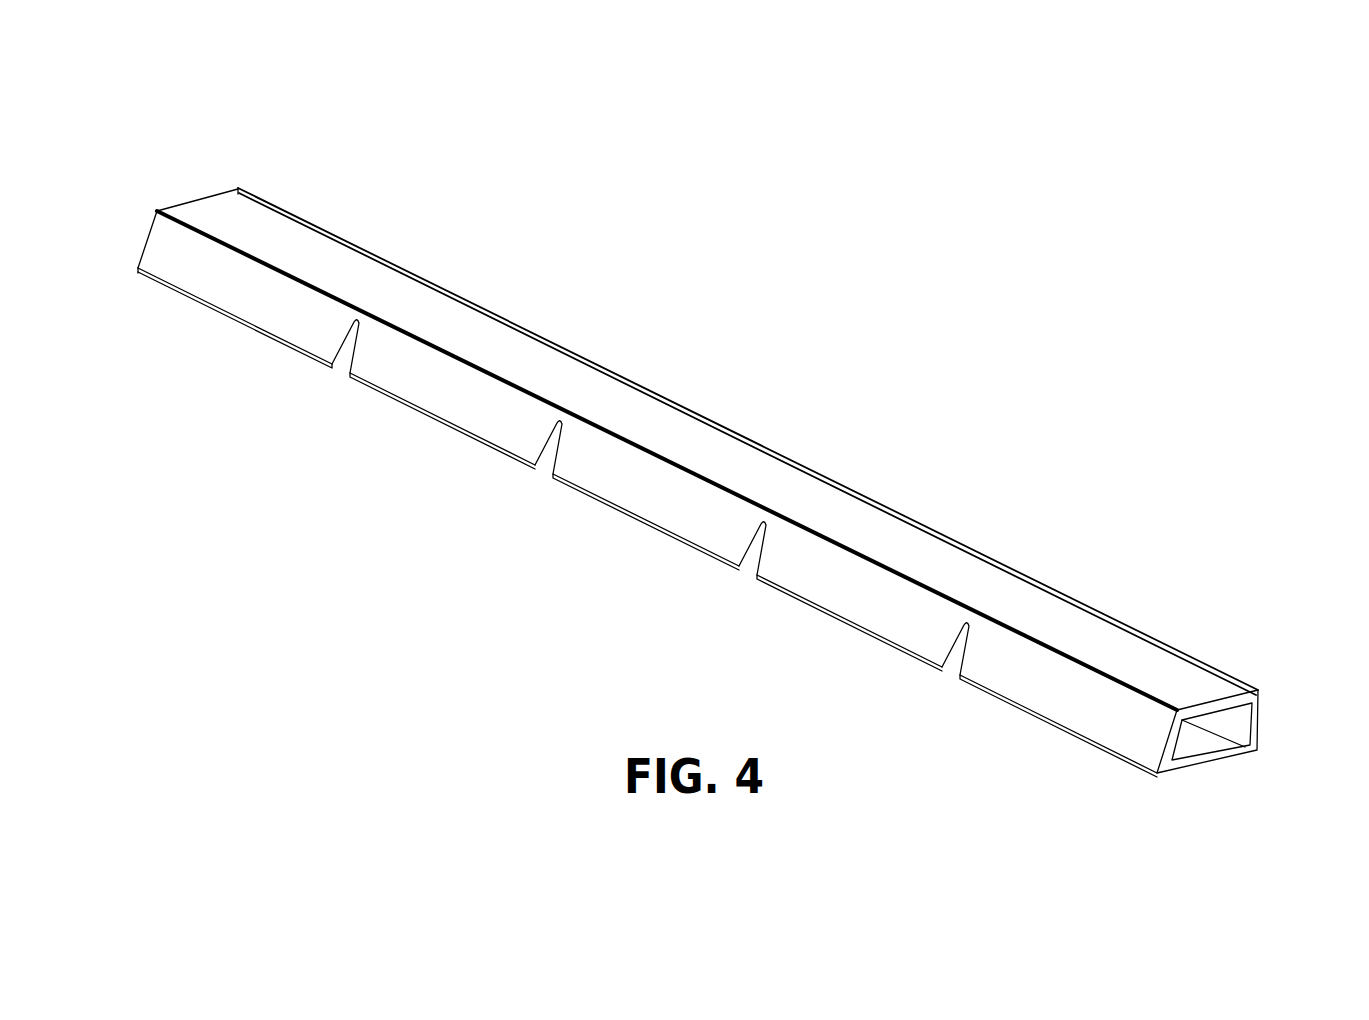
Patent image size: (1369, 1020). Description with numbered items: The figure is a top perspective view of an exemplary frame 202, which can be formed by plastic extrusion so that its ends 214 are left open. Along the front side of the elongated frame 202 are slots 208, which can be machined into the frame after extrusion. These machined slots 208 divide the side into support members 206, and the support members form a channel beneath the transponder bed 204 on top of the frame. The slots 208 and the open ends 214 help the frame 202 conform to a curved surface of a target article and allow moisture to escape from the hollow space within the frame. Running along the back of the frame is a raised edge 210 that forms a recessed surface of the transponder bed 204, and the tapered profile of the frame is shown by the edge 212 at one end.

The frame 202 is at (224, 122).
The transponder bed 204 is at (1137, 660).
The support members 206 is at (443, 392).
The slots 208 is at (347, 353).
The raised edge 210 is at (552, 342).
The edge 212 is at (142, 245).
The ends 214 is at (1207, 740).